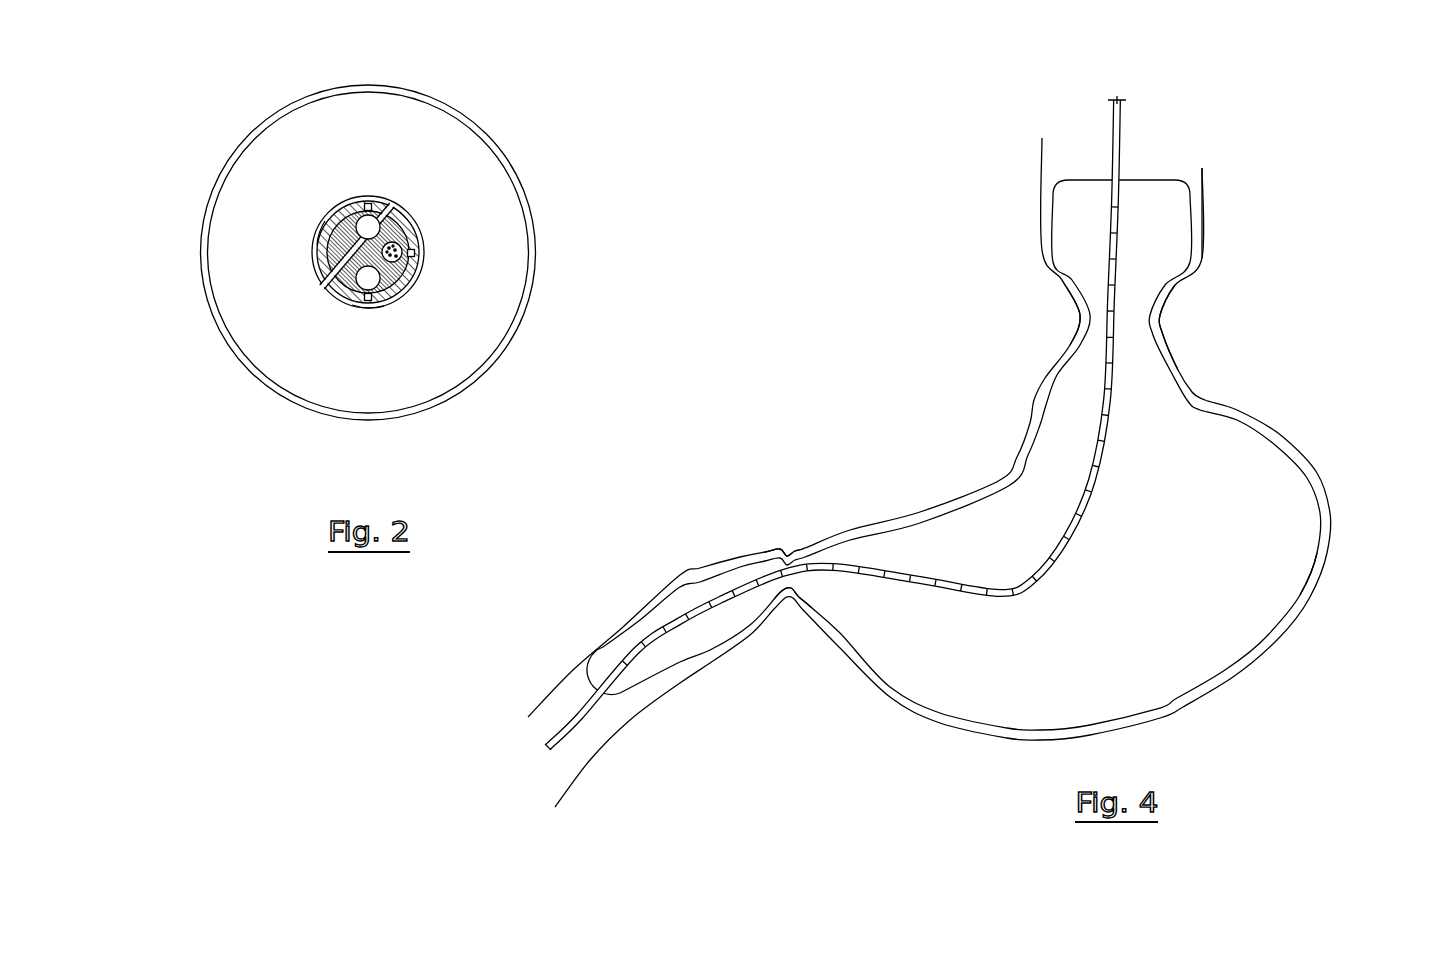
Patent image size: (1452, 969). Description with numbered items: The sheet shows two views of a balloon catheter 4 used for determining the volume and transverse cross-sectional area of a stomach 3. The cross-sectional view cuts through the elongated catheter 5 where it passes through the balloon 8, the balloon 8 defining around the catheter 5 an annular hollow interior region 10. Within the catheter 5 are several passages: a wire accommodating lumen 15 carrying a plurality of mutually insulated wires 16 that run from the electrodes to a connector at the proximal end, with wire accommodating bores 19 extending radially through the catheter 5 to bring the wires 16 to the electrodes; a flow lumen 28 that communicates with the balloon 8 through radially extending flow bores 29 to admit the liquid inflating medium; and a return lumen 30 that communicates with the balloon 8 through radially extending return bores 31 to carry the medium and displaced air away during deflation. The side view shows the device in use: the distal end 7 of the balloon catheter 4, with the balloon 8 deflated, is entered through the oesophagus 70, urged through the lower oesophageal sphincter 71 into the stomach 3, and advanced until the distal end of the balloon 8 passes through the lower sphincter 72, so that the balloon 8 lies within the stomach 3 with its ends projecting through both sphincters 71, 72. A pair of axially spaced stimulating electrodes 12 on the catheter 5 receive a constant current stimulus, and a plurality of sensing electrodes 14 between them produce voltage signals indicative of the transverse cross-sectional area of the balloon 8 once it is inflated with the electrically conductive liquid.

In FIG. 4, the stomach 3 is at (1322, 470).
In FIG. 2, the balloon catheter 4 is at (612, 120).
In FIG. 4, the balloon catheter 4 is at (1208, 687).
In FIG. 2, the elongated catheter 5 is at (415, 280).
In FIG. 4, the elongated catheter 5 is at (1120, 147).
In FIG. 4, the distal end 7 is at (548, 747).
In FIG. 2, the balloon 8 is at (428, 100).
In FIG. 4, the balloon 8 is at (1082, 178).
In FIG. 2, the annular hollow interior region 10 is at (298, 155).
In FIG. 4, the annular hollow interior region 10 is at (1265, 545).
In FIG. 4, the stimulating electrodes 12 is at (1120, 205).
In FIG. 2, the sensing electrodes 14 is at (313, 253).
In FIG. 4, the sensing electrodes 14 is at (1117, 233).
In FIG. 2, the wire accommodating lumen 15 is at (417, 231).
In FIG. 2, the mutually insulated wires 16 is at (403, 287).
In FIG. 2, the wire accommodating bores 19 is at (423, 241).
In FIG. 2, the flow lumen 28 is at (325, 221).
In FIG. 2, the flow bores 29 is at (377, 216).
In FIG. 2, the return lumen 30 is at (358, 283).
In FIG. 2, the return bores 31 is at (378, 303).
In FIG. 4, the oesophagus 70 is at (1202, 257).
In FIG. 4, the lower oesophageal sphincter 71 is at (1160, 315).
In FIG. 4, the lower sphincter 72 is at (788, 547).